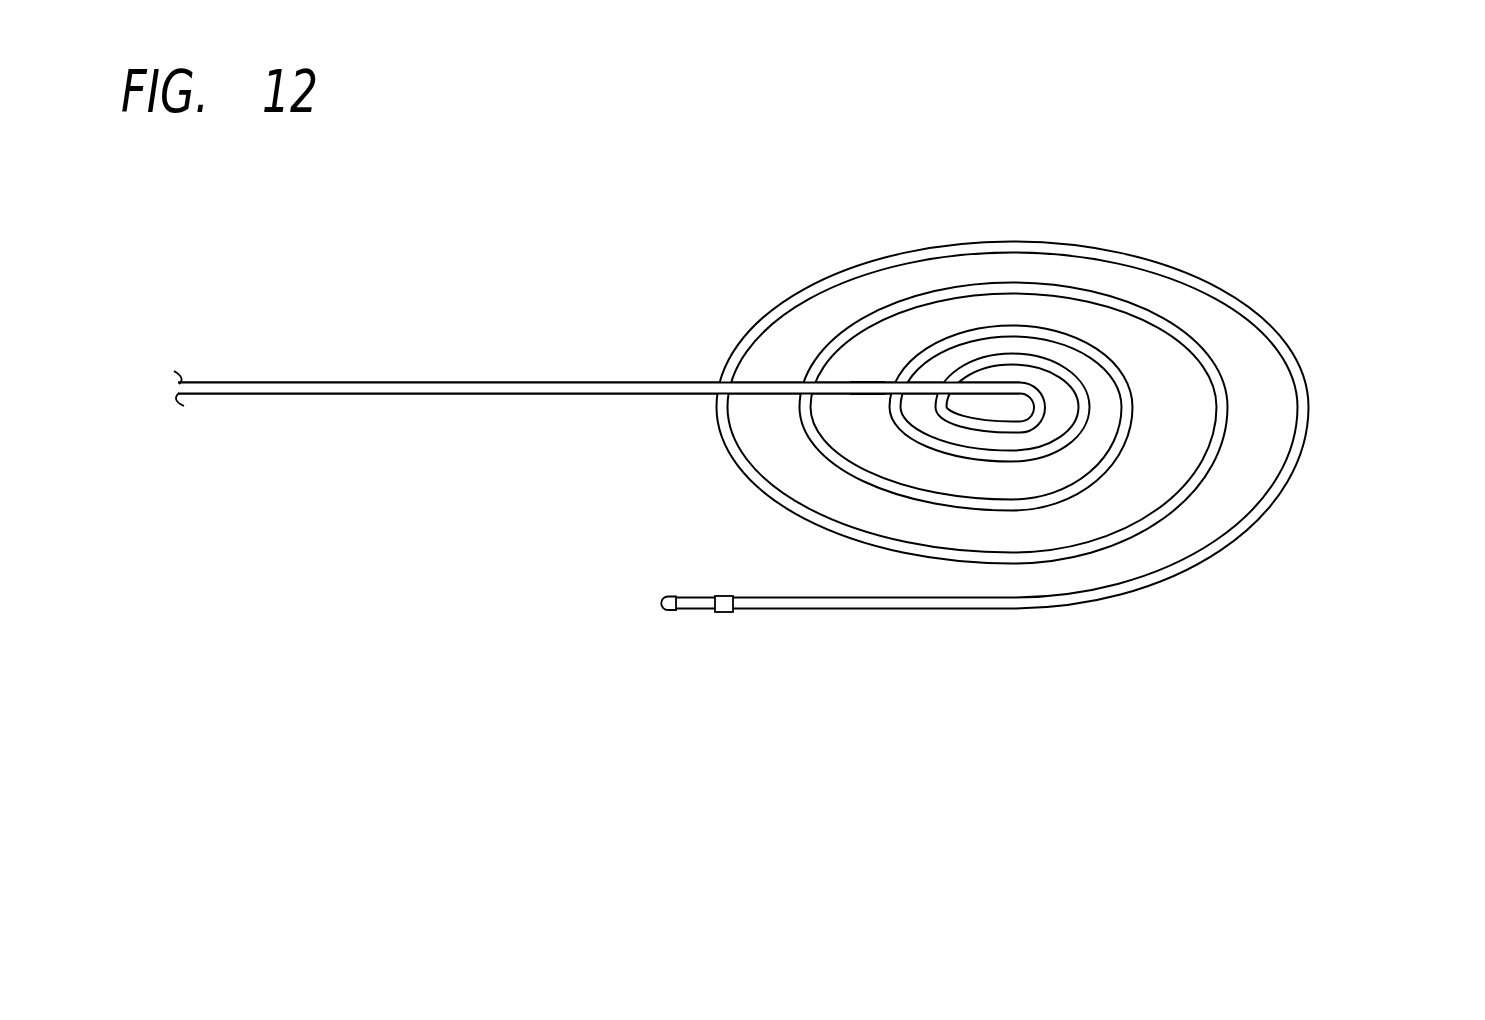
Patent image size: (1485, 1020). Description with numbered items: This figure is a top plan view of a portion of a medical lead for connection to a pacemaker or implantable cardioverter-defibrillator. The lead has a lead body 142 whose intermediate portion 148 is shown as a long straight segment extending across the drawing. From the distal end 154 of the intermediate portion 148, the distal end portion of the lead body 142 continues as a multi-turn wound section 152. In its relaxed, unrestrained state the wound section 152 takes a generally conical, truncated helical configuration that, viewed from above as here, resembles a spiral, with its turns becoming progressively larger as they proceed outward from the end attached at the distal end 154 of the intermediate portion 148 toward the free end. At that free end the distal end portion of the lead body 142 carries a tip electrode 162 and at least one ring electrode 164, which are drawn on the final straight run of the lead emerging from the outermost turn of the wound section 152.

The lead body 142 is at (812, 450).
The intermediate portion 148 is at (512, 382).
The wound section 152 is at (1304, 294).
The distal end of the intermediate portion 154 is at (865, 382).
The tip electrode 162 is at (661, 603).
The ring electrode 164 is at (719, 613).